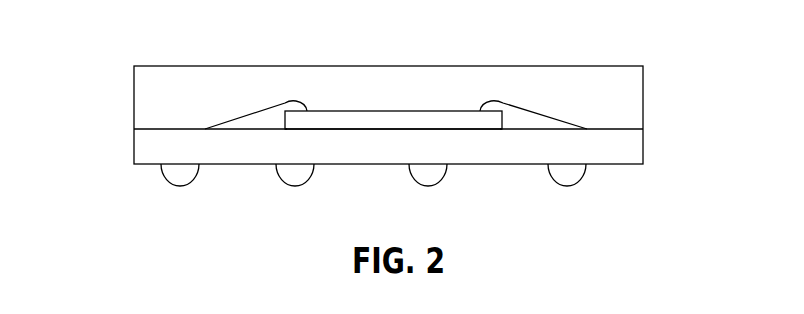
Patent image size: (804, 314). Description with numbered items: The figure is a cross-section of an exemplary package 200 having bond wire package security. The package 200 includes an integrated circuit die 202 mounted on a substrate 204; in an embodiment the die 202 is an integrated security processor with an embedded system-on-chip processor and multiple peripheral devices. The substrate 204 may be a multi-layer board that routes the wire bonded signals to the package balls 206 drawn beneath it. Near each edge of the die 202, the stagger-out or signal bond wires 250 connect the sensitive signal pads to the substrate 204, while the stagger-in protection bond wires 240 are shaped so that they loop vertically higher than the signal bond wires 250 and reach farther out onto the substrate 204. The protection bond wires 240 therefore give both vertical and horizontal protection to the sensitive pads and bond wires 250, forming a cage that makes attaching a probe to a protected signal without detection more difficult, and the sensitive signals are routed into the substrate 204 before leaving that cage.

The package 200 is at (429, 112).
The integrated circuit die 202 is at (412, 111).
The substrate 204 is at (630, 153).
The package balls 206 is at (170, 172).
The stagger-in bond wires 240 is at (232, 109).
The stagger-out bond wires 250 is at (276, 132).